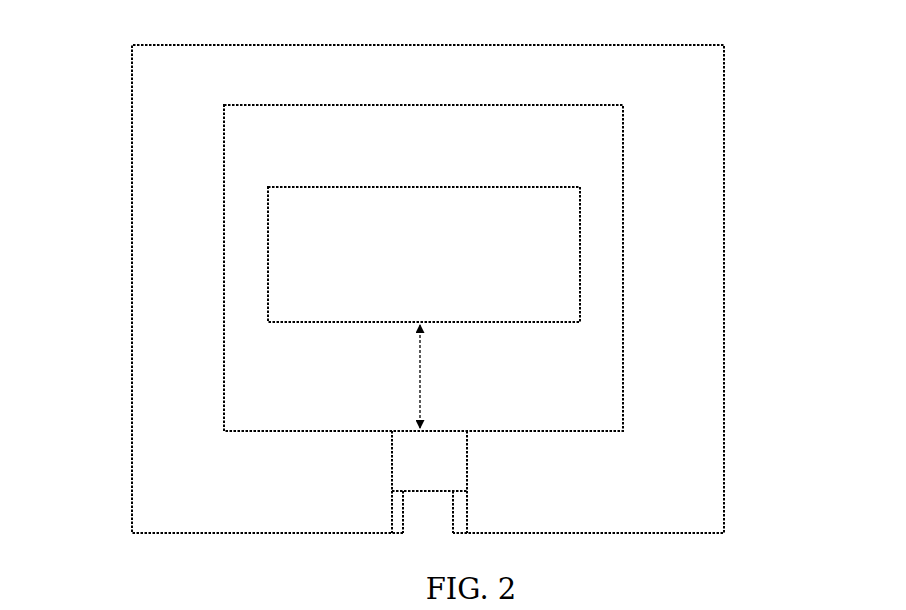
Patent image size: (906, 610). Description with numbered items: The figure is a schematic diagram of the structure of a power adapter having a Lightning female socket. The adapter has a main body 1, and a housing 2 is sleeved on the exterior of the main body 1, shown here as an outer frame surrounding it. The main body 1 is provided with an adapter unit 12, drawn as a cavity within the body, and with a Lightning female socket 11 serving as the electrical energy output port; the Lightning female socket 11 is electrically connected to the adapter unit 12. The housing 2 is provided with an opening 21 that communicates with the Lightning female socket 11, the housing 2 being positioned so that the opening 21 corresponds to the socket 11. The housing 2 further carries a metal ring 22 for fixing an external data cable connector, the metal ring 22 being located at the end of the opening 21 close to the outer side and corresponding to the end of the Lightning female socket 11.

The main body 1 is at (626, 147).
The housing 2 is at (727, 315).
The Lightning female socket 11 is at (447, 471).
The adapter unit 12 is at (583, 233).
The opening 21 is at (425, 520).
The metal ring 22 is at (470, 520).